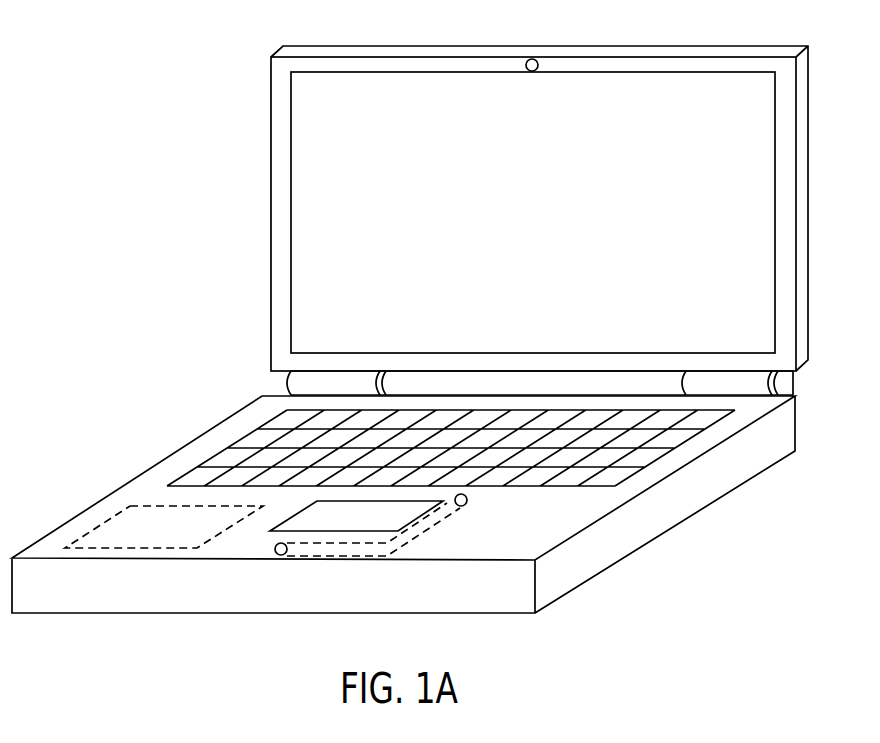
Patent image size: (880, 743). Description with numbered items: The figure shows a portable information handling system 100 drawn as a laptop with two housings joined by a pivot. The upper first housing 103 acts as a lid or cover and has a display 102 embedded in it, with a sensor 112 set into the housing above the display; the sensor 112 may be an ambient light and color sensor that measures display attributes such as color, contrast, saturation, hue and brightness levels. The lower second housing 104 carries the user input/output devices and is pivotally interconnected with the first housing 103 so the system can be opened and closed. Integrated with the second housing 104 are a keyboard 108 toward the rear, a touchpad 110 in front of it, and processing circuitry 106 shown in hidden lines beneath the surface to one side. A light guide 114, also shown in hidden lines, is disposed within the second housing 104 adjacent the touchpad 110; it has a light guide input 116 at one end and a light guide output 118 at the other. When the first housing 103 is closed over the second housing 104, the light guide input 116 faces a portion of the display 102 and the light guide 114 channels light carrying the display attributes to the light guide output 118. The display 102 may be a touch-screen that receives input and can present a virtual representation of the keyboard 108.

The information handling system 100 is at (112, 90).
The display 102 is at (720, 85).
The first housing 103 is at (652, 63).
The second housing 104 is at (153, 459).
The processing circuitry 106 is at (140, 550).
The keyboard 108 is at (712, 424).
The touchpad 110 is at (270, 531).
The sensor 112 is at (537, 58).
The light guide 114 is at (442, 525).
The light guide input 116 is at (467, 503).
The light guide output 118 is at (279, 555).